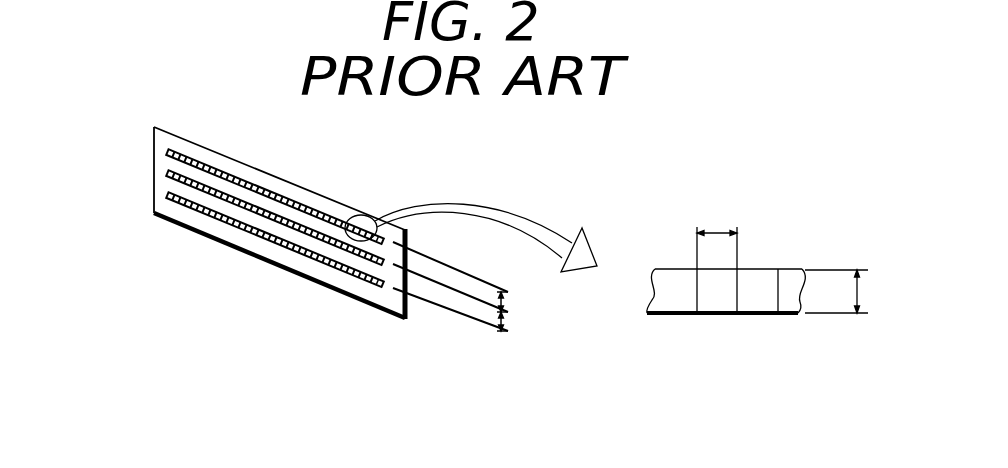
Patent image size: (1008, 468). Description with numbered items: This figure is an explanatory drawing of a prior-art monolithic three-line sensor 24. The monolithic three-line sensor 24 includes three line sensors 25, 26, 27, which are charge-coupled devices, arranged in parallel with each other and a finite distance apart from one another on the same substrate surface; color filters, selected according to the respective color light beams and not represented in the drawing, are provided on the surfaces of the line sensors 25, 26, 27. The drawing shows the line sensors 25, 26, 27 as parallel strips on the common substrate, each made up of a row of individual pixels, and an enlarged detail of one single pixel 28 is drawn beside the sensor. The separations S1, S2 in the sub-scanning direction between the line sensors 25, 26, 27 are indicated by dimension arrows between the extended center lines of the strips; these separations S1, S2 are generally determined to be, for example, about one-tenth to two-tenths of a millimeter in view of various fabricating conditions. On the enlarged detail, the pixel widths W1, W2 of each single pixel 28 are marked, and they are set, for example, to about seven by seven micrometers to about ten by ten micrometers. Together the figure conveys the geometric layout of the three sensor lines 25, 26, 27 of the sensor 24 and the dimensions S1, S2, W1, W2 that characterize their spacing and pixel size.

The monolithic 3-line sensor 24 is at (153, 170).
The line sensor 25 is at (196, 152).
The line sensor 26 is at (293, 222).
The line sensor 27 is at (228, 223).
The single pixel 28 is at (352, 216).
The separation S1 is at (505, 300).
The separation S2 is at (508, 335).
The pixel width W1 is at (717, 233).
The pixel width W2 is at (854, 291).